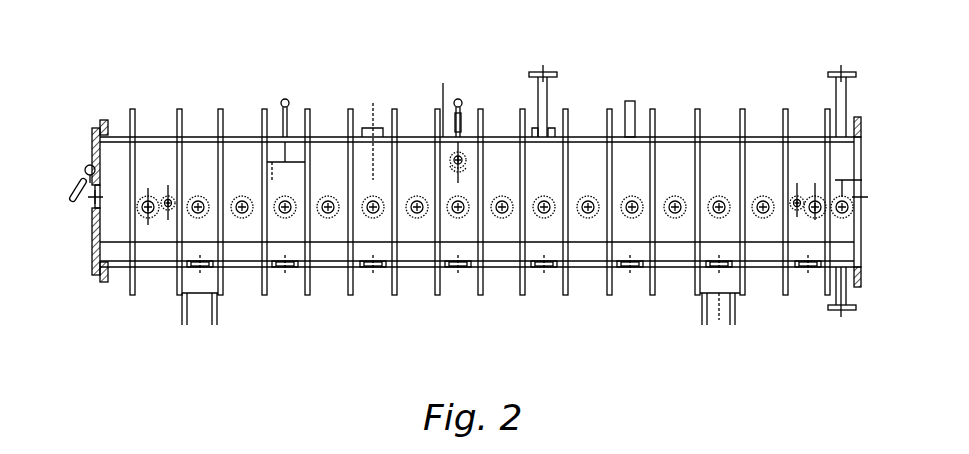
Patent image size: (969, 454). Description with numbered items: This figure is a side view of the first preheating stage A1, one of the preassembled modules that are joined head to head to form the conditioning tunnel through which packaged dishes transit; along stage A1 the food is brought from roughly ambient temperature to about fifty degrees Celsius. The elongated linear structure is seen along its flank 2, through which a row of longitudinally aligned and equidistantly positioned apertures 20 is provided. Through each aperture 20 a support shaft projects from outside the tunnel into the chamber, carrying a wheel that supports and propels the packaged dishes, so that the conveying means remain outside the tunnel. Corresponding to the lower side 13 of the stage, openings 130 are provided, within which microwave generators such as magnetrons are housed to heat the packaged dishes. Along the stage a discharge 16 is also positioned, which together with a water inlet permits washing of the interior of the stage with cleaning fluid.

The preheating stage A1 is at (673, 119).
The flank 2 is at (320, 160).
The lower side 13 is at (324, 268).
The opening 130 is at (281, 270).
The aperture 20 is at (631, 219).
The discharge 16 is at (846, 298).